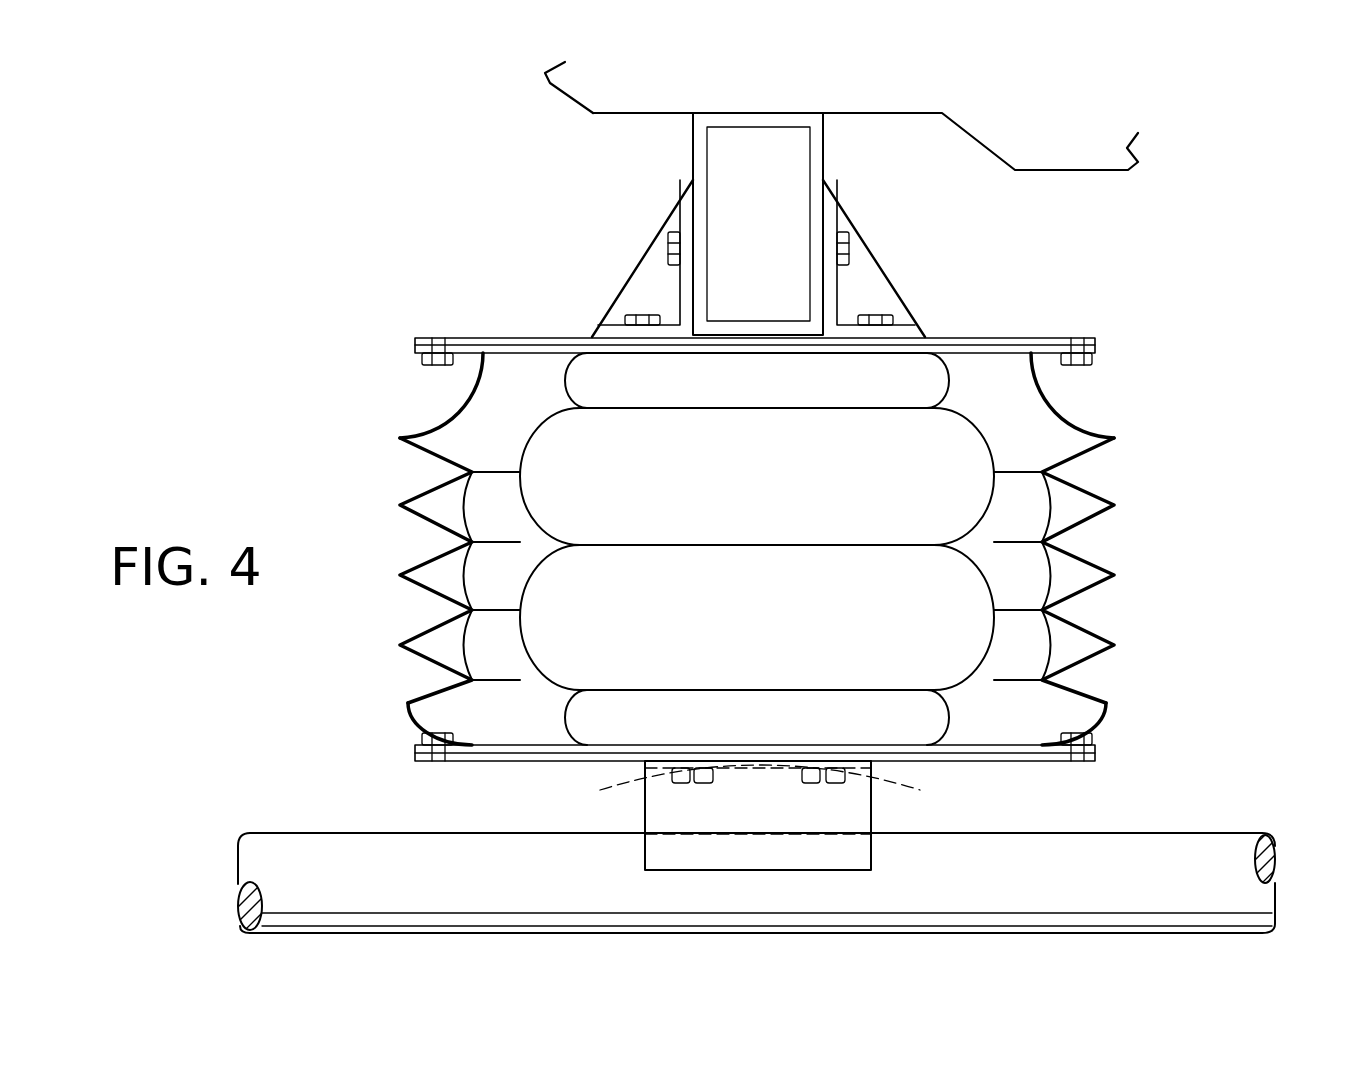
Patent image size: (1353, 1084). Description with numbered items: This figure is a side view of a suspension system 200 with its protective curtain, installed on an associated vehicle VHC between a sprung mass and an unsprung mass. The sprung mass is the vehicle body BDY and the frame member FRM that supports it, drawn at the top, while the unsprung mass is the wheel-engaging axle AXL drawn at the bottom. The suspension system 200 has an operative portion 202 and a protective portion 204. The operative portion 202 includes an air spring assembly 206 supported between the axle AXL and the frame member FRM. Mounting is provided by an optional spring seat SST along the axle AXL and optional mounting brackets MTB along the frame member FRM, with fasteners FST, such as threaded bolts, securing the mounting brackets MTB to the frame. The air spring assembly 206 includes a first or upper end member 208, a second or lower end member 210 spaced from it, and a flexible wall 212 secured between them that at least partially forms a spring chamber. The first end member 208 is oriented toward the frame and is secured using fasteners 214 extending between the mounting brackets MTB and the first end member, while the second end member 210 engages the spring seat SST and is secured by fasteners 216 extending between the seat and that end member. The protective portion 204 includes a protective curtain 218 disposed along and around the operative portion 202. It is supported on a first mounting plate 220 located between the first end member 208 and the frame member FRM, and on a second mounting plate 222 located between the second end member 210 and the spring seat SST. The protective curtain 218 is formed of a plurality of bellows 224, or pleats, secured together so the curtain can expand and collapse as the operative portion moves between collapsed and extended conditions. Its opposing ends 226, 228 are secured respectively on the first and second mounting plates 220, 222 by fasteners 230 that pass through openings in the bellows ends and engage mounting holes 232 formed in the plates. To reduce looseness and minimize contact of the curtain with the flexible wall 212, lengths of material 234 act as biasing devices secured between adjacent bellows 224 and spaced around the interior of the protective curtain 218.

The suspension system 200 is at (331, 332).
The operative portion 202 is at (528, 392).
The protective portion 204 is at (366, 546).
The air spring assembly 206 is at (992, 447).
The first end member 208 is at (773, 370).
The second end member 210 is at (585, 730).
The flexible wall 212 is at (990, 585).
The fasteners 214 is at (640, 313).
The fasteners 216 is at (680, 773).
The protective curtain 218 is at (428, 602).
The first mounting plate 220 is at (1000, 340).
The second mounting plate 222 is at (1020, 755).
The bellows 224 is at (1095, 493).
The end of protective curtain 226 is at (442, 390).
The end of protective curtain 228 is at (1095, 711).
The fasteners 230 is at (1090, 360).
The mounting holes 232 is at (435, 335).
The lengths of material 234 is at (460, 648).
The vehicle VHC is at (559, 97).
The vehicle body BDY is at (980, 140).
The frame member FRM is at (823, 167).
The mounting brackets MTB is at (640, 252).
The fasteners FST is at (670, 240).
The axle AXL is at (275, 850).
The spring seat SST is at (690, 818).